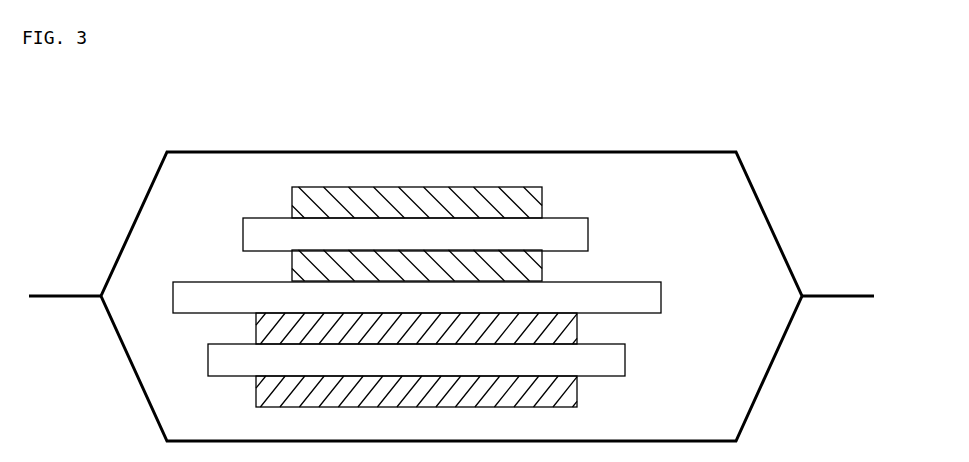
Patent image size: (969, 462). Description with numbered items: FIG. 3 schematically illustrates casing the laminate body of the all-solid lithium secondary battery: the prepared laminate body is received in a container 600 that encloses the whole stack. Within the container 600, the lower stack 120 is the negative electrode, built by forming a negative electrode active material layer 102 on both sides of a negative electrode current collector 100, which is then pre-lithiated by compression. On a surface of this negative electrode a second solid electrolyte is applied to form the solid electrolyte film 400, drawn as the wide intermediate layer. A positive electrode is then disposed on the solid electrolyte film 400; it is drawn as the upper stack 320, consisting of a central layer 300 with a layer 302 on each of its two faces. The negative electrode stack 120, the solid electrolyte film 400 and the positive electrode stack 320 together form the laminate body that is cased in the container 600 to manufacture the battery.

The housing / encapsulant 600 is at (450, 151).
The first stack 320 is at (481, 234).
The first insulating layer 302 is at (542, 201).
The first conductive layer 300 is at (588, 232).
The intermediate layer 400 is at (661, 295).
The second stack 120 is at (482, 360).
The negative electrode active material layer 102 is at (577, 327).
The negative electrode current collector 100 is at (625, 358).